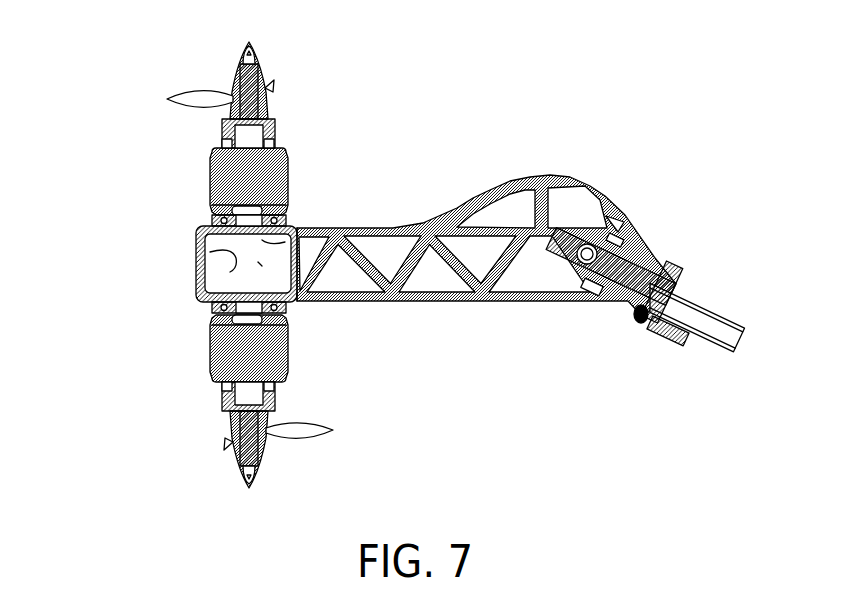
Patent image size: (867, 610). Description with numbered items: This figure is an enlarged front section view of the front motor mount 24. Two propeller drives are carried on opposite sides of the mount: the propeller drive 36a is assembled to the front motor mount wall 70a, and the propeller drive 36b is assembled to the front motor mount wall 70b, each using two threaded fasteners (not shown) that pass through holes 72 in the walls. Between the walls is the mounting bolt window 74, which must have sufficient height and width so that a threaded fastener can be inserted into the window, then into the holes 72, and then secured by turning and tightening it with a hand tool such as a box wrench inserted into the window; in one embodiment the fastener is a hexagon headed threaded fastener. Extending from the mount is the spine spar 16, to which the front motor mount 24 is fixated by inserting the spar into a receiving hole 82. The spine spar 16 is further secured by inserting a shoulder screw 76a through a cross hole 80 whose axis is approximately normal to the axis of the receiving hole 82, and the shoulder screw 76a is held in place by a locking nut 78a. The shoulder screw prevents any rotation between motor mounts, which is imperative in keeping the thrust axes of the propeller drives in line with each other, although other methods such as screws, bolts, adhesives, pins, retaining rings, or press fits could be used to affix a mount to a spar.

The propeller drive 36a is at (210, 183).
The propeller drive 36b is at (210, 343).
The front motor mount wall 70a is at (232, 257).
The front motor mount wall 70b is at (238, 270).
The holes 72 is at (298, 238).
The mounting bolt window 74 is at (258, 263).
The front motor mount 24 is at (462, 205).
The cross hole 80 is at (648, 265).
The shoulder screw 76a is at (700, 298).
The locking nut 78a is at (630, 310).
The receiving hole 82 is at (676, 327).
The spine spar 16 is at (703, 342).